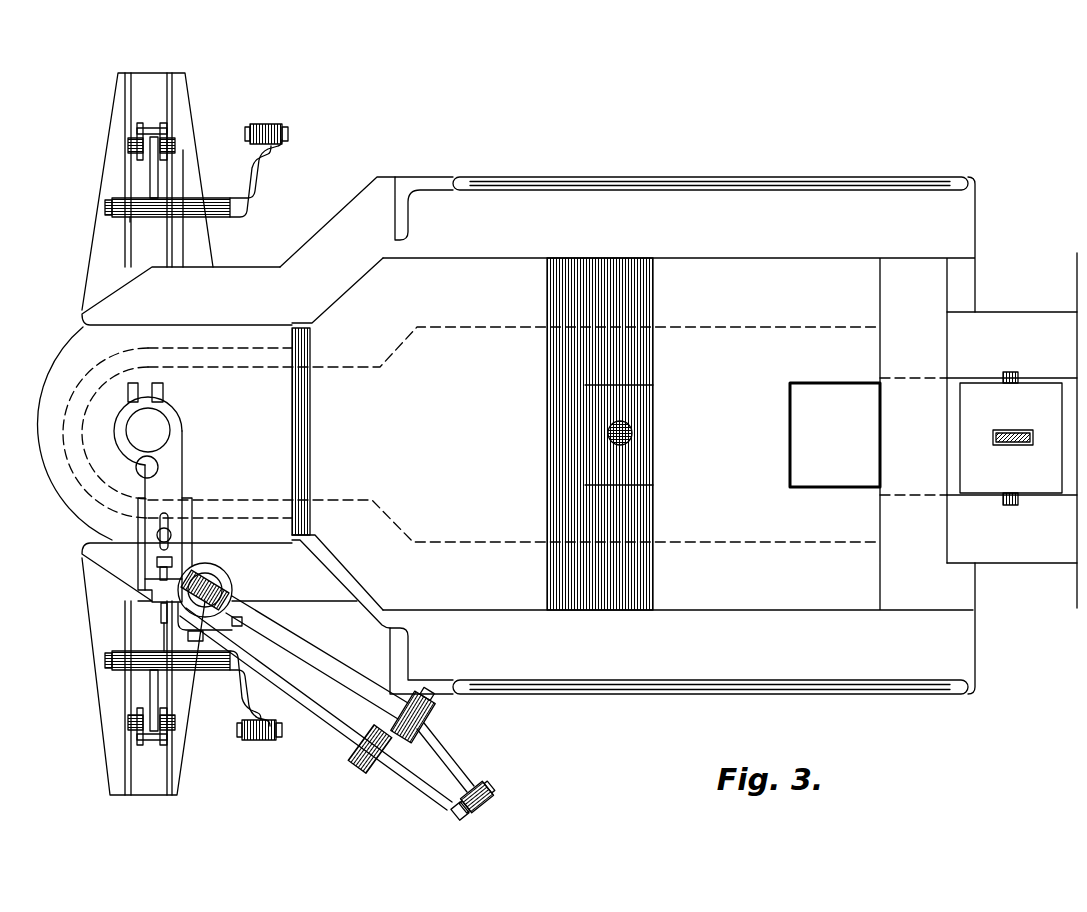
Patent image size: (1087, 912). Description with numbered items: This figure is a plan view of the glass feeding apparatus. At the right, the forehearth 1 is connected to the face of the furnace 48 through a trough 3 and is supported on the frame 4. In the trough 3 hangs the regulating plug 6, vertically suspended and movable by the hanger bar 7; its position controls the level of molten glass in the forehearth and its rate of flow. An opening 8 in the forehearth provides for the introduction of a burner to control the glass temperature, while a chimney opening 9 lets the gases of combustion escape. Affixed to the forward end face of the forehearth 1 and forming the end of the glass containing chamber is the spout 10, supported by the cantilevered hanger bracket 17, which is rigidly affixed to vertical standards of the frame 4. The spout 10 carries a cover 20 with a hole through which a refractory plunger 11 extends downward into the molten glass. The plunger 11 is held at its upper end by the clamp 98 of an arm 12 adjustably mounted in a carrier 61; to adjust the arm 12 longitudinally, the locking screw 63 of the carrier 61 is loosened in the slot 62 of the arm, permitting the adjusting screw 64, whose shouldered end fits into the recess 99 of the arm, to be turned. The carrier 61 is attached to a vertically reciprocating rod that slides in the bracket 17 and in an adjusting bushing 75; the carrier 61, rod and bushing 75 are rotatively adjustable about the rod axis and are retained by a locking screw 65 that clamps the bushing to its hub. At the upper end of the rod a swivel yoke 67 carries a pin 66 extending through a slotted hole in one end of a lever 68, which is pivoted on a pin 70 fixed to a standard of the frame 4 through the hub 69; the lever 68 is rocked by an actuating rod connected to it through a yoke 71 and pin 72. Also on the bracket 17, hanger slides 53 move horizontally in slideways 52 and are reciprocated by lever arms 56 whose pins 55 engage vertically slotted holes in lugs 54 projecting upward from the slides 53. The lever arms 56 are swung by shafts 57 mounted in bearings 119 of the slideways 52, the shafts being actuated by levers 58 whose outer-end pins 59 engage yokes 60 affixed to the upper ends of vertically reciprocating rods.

The forehearth 1 is at (723, 278).
The trough 3 is at (1025, 556).
The frame 4 is at (410, 184).
The regulating plug 6 is at (985, 400).
The hanger bar 7 is at (1020, 432).
The opening 8 is at (640, 431).
The chimney opening 9 is at (826, 410).
The spout 10 is at (73, 418).
The refractory plunger 11 is at (158, 428).
The arm 12 is at (180, 453).
The hanger bracket 17 is at (355, 207).
The cover 20 is at (70, 376).
The furnace 48 is at (1075, 606).
The slideways 52 is at (191, 118).
The hanger slides 53 is at (158, 96).
The lugs 54 is at (142, 128).
The pins 55 is at (130, 147).
The lever arms 56 is at (152, 180).
The shafts 57 is at (106, 206).
The levers 58 is at (222, 220).
The pins 59 is at (246, 134).
The yokes 60 is at (280, 124).
The carrier 61 is at (190, 549).
The slot 62 is at (170, 519).
The locking screw 63 is at (172, 539).
The adjusting screw 64 is at (147, 580).
The locking screw 65 is at (203, 624).
The pin 66 is at (225, 573).
The swivel yoke 67 is at (222, 588).
The lever 68 is at (290, 656).
The hub 69 is at (420, 738).
The pin 70 is at (435, 709).
The yoke 71 is at (467, 790).
The pin 72 is at (500, 800).
The adjusting bushing 75 is at (237, 622).
The clamp 98 is at (118, 435).
The recess 99 is at (160, 563).
The bearings 119 is at (133, 218).